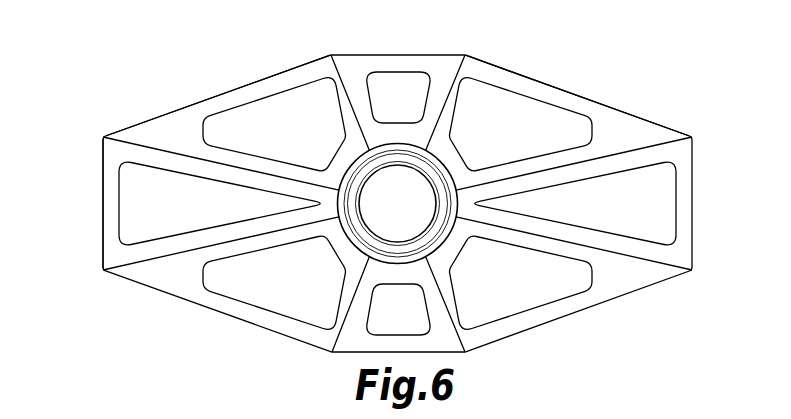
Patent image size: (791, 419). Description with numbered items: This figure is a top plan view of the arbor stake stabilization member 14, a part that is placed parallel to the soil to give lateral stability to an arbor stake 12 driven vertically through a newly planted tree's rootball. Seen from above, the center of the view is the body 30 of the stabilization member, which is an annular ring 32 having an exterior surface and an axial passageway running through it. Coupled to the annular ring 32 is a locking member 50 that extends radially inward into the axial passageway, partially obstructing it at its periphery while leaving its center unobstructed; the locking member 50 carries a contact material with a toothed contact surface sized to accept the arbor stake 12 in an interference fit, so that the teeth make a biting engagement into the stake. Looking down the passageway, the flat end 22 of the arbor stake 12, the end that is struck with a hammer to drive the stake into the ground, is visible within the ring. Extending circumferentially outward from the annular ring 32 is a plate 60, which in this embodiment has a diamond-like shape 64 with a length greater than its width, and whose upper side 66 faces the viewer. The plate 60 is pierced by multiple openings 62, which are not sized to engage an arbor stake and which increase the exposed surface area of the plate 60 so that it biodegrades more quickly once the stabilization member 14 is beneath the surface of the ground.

The arbor stake stabilization member 14 is at (164, 83).
The arbor stake 12 is at (401, 183).
The flat end 22 is at (418, 215).
The body 30 is at (397, 153).
The annular ring 32 is at (354, 251).
The locking member 50 is at (437, 180).
The plate 60 is at (228, 91).
The multiple openings 62 is at (120, 207).
The diamond-like shape 64 is at (102, 226).
The upper side 66 is at (616, 111).